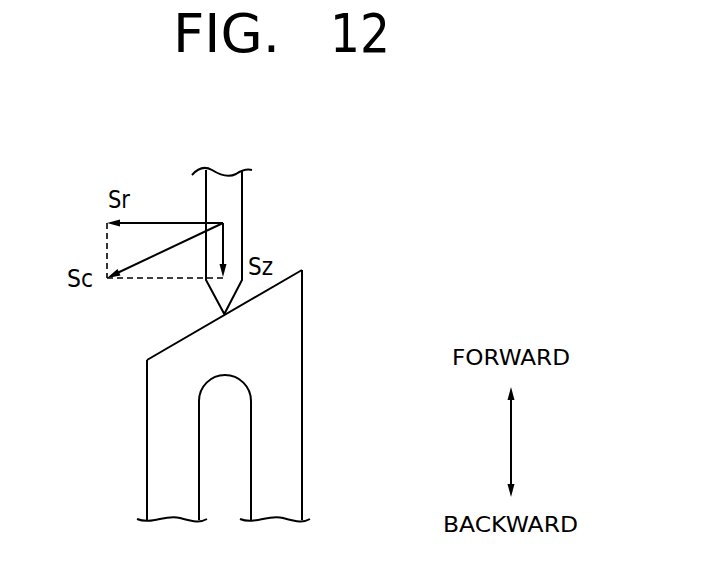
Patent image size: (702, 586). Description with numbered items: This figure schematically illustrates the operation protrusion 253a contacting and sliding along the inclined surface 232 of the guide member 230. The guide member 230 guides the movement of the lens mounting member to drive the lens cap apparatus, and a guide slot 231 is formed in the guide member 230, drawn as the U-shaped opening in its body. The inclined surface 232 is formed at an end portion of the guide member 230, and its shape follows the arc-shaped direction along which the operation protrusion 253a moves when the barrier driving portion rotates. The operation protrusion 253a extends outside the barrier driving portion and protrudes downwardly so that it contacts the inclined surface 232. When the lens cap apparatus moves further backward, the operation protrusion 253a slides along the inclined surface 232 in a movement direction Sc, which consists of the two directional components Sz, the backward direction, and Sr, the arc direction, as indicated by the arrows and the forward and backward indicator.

The operation protrusion 253a is at (236, 198).
The guide member 230 is at (160, 407).
The inclined surface 232 is at (165, 348).
The guide slot 231 is at (212, 450).